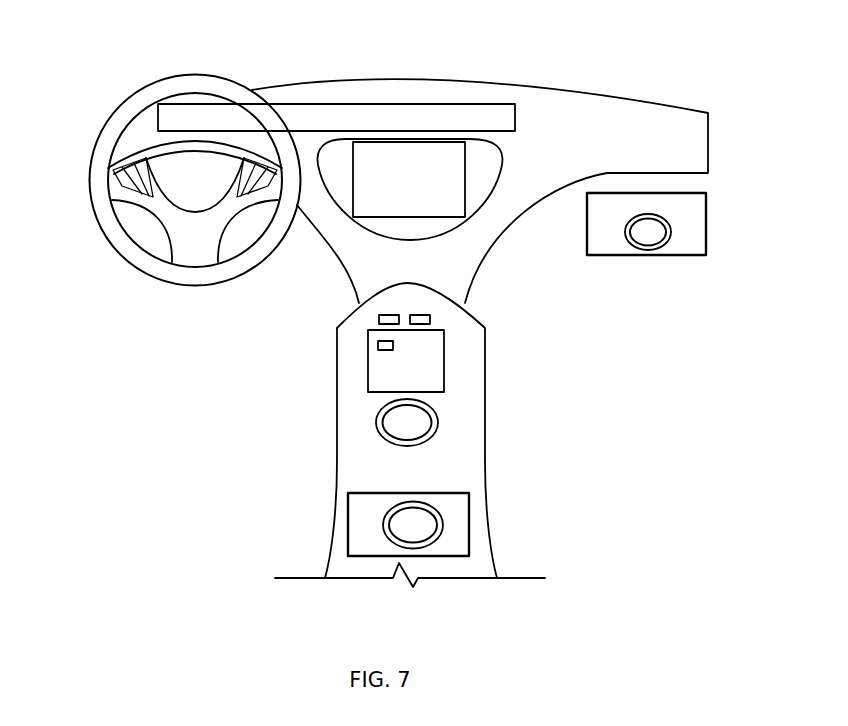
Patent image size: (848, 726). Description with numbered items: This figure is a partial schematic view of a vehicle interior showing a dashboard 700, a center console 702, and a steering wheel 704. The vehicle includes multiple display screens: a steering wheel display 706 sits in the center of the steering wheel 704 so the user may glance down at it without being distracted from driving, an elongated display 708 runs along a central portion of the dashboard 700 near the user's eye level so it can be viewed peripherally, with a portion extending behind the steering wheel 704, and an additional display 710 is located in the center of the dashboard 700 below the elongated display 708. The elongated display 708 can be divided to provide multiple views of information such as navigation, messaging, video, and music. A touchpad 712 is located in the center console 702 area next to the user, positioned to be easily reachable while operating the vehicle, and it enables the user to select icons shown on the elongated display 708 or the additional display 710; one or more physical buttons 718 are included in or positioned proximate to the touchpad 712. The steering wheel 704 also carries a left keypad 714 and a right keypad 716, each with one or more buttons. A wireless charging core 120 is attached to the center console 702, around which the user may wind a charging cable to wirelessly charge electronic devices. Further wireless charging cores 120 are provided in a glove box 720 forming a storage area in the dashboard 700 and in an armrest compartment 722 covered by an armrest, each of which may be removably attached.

The dashboard 700 is at (462, 83).
The center console 702 is at (472, 331).
The steering wheel 704 is at (117, 253).
The steering wheel display 706 is at (209, 173).
The elongated display 708 is at (515, 120).
The additional display 710 is at (453, 199).
The touchpad 712 is at (433, 371).
The left keypad 714 is at (128, 183).
The right keypad 716 is at (253, 188).
The physical buttons 718 is at (425, 315).
The glove box 720 is at (706, 214).
The armrest compartment 722 is at (469, 514).
The wireless charging core 120 is at (438, 420).